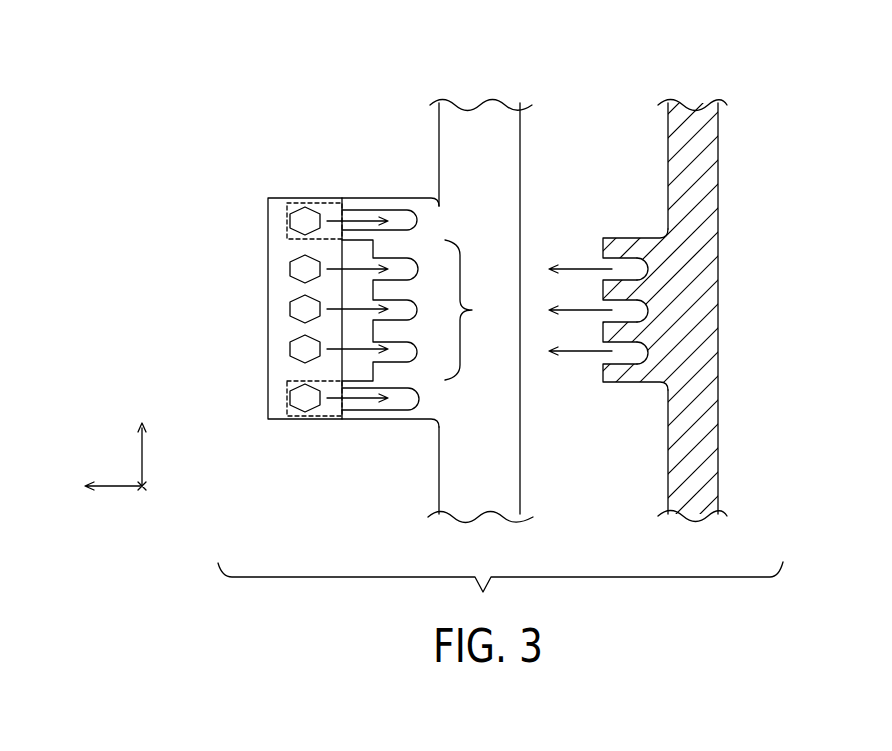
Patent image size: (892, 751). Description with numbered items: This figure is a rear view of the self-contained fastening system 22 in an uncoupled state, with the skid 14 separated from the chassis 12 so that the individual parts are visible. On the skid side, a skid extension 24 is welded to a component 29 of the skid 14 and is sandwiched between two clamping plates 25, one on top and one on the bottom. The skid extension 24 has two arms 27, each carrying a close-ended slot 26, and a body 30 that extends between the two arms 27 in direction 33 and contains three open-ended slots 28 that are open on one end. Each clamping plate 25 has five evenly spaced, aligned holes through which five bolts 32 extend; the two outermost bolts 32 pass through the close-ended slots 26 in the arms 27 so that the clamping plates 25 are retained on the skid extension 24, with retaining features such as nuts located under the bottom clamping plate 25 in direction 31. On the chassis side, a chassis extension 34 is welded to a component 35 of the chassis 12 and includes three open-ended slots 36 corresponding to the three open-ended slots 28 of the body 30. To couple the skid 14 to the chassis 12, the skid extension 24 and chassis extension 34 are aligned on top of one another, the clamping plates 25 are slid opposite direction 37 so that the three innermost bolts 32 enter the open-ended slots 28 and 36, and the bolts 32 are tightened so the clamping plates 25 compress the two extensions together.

The chassis 12 is at (687, 86).
The skid 14 is at (466, 80).
The fastening system 22 is at (190, 80).
The skid extension 24 is at (358, 181).
The clamping plates 25 is at (285, 250).
The close-ended slots 26 is at (400, 218).
The arms 27 is at (396, 198).
The open-ended slots 28 is at (408, 268).
The component of the skid 29 is at (490, 152).
The body 30 is at (475, 310).
The direction 31 is at (146, 489).
The bolts 32 is at (303, 215).
The direction 33 is at (143, 463).
The chassis extension 34 is at (634, 226).
The component of the chassis 35 is at (697, 172).
The open-ended slots 36 is at (640, 269).
The direction 37 is at (114, 487).